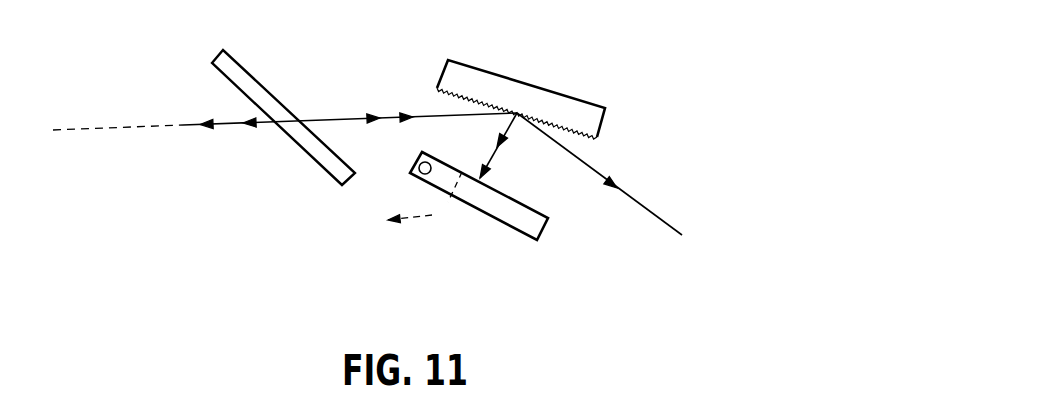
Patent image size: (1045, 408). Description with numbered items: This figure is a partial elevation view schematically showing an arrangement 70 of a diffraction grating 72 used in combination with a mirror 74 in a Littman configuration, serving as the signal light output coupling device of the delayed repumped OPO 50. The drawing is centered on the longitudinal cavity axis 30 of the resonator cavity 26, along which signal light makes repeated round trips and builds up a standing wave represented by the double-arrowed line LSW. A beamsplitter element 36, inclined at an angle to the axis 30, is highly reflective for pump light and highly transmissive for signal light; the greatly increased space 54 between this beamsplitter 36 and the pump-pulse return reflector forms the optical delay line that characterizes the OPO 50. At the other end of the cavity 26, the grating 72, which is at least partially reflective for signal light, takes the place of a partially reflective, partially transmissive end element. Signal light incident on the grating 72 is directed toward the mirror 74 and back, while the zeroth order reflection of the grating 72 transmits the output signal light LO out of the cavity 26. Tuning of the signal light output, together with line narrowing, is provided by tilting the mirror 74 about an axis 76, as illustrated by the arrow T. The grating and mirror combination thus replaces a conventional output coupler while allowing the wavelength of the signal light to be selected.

The resonator cavity 26 is at (150, 97).
The longitudinal cavity axis 30 is at (128, 128).
The beamsplitter element 36 is at (243, 80).
The space 54 is at (307, 216).
The diffraction grating 72 is at (588, 117).
The mirror 74 is at (527, 228).
The axis 76 is at (418, 172).
The arrangement 70 is at (587, 238).
The OPO 50 is at (312, 324).
The standing wave LSW is at (400, 117).
The output signal light LO is at (655, 210).
The arrow T is at (445, 205).